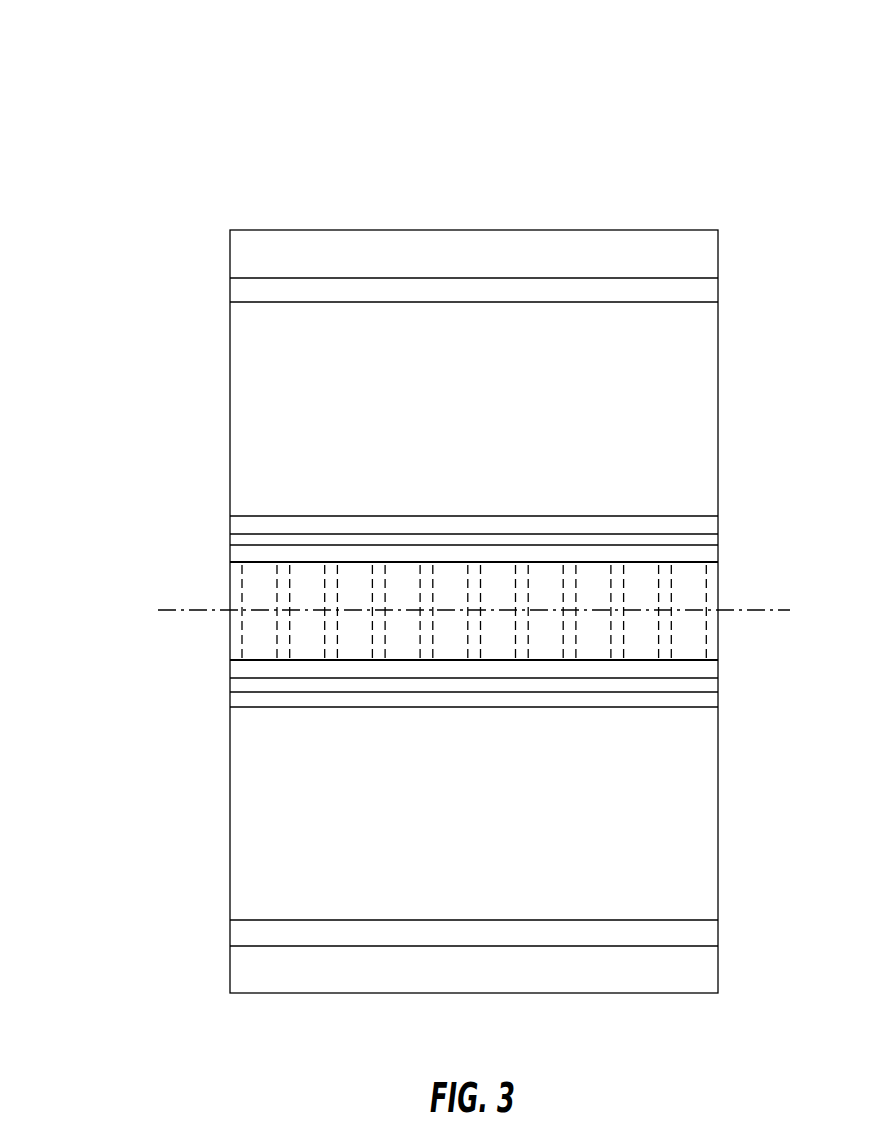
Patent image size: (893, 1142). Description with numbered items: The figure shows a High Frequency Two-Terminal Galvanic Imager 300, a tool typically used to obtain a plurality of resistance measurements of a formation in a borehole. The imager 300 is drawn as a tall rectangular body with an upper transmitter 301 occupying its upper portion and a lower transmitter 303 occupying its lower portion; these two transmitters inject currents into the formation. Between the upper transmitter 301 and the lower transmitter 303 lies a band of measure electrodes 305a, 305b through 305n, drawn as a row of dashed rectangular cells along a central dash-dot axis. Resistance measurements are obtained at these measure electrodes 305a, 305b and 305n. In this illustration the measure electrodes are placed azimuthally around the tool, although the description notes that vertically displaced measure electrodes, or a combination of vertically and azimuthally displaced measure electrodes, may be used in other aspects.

The High Frequency Two-Terminal Galvanic Imager 300 is at (138, 54).
The upper transmitter 301 is at (709, 350).
The lower transmitter 303 is at (709, 748).
The measure electrode 305a is at (250, 583).
The measure electrode 305b is at (303, 623).
The measure electrode 305n is at (697, 587).